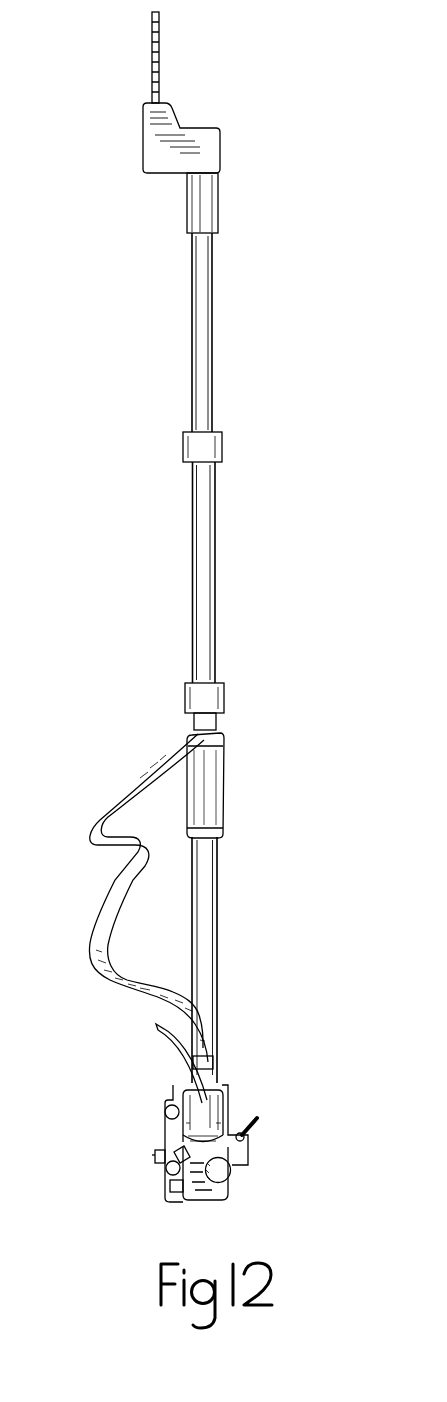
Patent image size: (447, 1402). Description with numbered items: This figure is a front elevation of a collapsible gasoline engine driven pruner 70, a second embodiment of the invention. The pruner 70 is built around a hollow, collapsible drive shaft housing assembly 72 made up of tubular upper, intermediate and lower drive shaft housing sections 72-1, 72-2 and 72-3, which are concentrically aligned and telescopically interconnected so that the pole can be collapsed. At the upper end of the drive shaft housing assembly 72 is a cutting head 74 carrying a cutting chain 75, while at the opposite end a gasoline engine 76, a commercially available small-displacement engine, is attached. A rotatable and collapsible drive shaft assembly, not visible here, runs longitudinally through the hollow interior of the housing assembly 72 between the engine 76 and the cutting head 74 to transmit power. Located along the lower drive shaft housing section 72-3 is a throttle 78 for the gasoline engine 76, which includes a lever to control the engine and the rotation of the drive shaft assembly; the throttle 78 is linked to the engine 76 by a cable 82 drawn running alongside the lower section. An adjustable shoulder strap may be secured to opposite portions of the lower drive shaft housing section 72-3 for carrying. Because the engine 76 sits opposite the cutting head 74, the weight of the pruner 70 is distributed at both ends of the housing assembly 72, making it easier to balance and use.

The pruner 70 is at (222, 560).
The drive shaft housing assembly 72 is at (219, 643).
The upper drive shaft housing section 72-1 is at (214, 297).
The intermediate drive shaft housing section 72-2 is at (192, 606).
The lower drive shaft housing section 72-3 is at (208, 970).
The cutting head 74 is at (222, 152).
The cutting chain 75 is at (160, 53).
The gasoline engine 76 is at (228, 1105).
The throttle 78 is at (215, 800).
The cable 82 is at (117, 897).